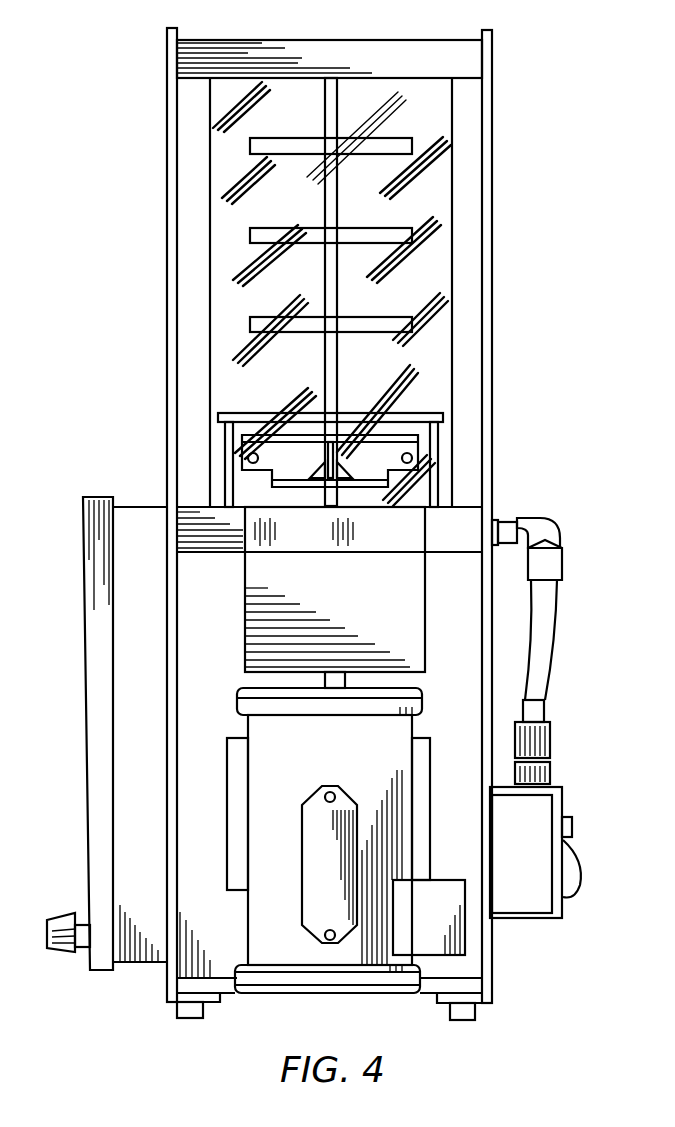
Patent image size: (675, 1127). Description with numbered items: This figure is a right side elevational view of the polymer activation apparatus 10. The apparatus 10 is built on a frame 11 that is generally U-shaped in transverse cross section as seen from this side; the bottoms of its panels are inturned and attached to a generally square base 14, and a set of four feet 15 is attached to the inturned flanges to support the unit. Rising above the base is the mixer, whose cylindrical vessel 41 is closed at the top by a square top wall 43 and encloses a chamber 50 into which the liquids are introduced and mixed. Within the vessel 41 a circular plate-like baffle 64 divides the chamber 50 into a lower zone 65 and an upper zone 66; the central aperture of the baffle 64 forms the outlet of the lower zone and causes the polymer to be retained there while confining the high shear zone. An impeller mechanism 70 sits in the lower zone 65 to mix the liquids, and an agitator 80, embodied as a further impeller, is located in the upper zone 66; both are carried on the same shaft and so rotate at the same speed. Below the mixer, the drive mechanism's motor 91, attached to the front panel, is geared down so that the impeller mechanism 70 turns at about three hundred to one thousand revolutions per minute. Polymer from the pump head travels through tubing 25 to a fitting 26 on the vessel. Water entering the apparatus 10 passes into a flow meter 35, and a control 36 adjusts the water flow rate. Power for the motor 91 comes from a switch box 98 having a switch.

The polymer activation apparatus 10 is at (570, 166).
The frame 11 is at (494, 343).
The base 14 is at (430, 990).
The feet 15 is at (177, 1006).
The tubing 25 is at (537, 680).
The fitting 26 is at (545, 535).
The flow meter 35 is at (83, 604).
The control 36 is at (60, 917).
The cylindrical vessel 41 is at (452, 150).
The top wall 43 is at (473, 60).
The chamber 50 is at (223, 330).
The baffle 64 is at (437, 407).
The lower zone 65 is at (420, 500).
The upper zone 66 is at (438, 276).
The impeller mechanism 70 is at (381, 437).
The agitator 80 is at (287, 349).
The motor 91 is at (283, 953).
The switch box 98 is at (535, 905).